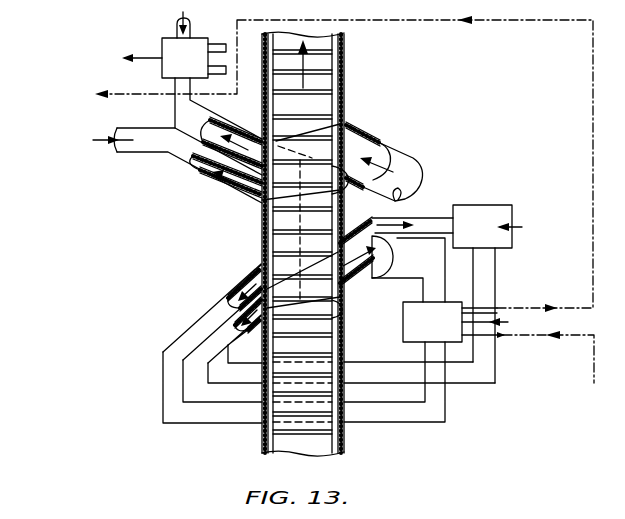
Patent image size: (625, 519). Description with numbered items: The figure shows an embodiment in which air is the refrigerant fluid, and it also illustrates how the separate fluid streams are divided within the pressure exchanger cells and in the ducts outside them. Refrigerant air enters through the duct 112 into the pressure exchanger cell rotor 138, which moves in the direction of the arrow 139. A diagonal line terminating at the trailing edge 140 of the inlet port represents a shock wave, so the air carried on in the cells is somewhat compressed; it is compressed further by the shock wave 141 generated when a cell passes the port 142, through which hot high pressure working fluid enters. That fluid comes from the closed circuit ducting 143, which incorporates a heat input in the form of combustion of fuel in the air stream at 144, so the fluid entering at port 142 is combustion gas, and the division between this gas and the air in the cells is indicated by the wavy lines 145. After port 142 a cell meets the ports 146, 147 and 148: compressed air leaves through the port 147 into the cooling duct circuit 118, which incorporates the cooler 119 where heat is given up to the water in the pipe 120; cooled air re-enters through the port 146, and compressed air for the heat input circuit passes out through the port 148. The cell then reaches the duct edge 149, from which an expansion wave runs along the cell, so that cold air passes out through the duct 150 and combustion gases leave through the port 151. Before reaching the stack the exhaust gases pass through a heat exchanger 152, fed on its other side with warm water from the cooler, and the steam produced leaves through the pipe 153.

The duct 112 is at (384, 150).
The cooling duct circuit 118 is at (393, 424).
The cooler 119 is at (434, 332).
The pipe 120 is at (568, 338).
The pressure exchanger cell rotor 138 is at (336, 101).
The arrow 139 is at (312, 82).
The trailing edge 140 is at (346, 126).
The shock wave 141 is at (338, 318).
The port 142 is at (259, 330).
The closed circuit ducting 143 is at (497, 267).
The heat input 144 is at (483, 235).
The wavy lines 145 is at (341, 198).
The port 146 is at (250, 268).
The port 147 is at (355, 286).
The port 148 is at (383, 218).
The duct edge 149 is at (266, 202).
The duct 150 is at (262, 186).
The port 151 is at (262, 143).
The heat exchanger 152 is at (198, 67).
The pipe 153 is at (164, 96).